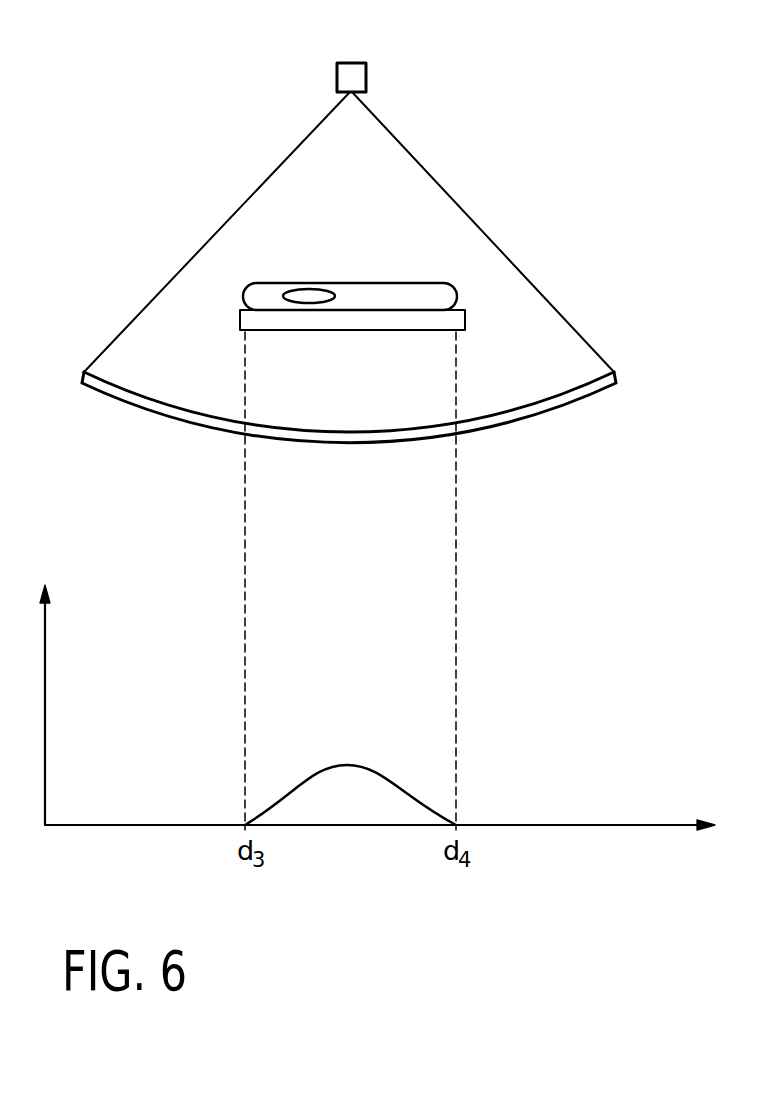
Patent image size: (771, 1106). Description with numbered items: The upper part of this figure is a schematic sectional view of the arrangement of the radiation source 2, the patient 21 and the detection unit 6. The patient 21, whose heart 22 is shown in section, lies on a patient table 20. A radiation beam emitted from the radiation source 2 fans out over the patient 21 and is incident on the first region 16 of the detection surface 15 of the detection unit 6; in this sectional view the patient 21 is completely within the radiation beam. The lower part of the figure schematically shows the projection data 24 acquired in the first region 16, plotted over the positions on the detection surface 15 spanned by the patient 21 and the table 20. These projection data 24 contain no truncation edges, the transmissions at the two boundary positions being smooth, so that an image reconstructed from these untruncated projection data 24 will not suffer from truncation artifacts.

The radiation source 2 is at (357, 62).
The detection unit 6 is at (497, 428).
The detection surface 15 is at (565, 390).
The first region 16 is at (135, 364).
The patient table 20 is at (240, 318).
The patient 21 is at (418, 283).
The heart 22 is at (308, 292).
The projection data 24 is at (356, 765).